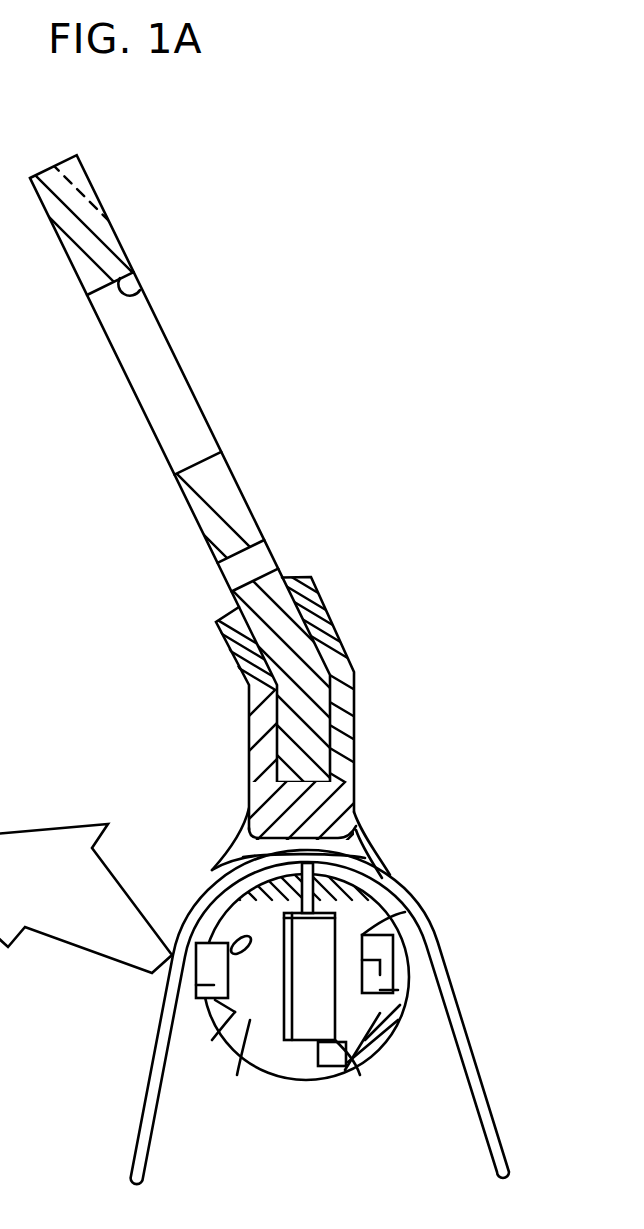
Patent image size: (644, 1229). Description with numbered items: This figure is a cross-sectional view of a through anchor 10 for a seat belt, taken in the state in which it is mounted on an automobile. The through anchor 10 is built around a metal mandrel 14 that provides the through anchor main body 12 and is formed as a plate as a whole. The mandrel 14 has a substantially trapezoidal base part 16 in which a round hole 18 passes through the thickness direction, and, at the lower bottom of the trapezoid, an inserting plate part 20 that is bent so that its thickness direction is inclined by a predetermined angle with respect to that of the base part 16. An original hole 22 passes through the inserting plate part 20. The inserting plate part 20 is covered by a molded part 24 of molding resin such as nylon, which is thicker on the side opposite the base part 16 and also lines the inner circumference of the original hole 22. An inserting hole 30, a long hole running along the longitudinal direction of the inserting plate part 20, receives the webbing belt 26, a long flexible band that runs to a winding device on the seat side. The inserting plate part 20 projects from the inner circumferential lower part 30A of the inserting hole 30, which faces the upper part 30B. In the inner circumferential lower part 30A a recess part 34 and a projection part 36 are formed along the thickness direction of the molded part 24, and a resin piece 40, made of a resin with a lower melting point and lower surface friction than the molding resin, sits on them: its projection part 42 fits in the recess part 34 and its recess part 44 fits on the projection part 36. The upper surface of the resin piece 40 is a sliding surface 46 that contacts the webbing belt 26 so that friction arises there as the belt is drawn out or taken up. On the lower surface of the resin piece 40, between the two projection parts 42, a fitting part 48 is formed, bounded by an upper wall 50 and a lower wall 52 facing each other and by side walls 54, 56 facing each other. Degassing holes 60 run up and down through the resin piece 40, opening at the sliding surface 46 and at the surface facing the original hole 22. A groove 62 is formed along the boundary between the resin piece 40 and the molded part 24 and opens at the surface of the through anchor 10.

The through anchor 10 is at (294, 219).
The through anchor main body 12 is at (339, 553).
The mandrel 14 is at (238, 488).
The base part 16 is at (117, 233).
The round hole 18 is at (139, 290).
The inserting plate part 20 is at (331, 618).
The original hole 22 is at (333, 792).
The molded part 24 is at (355, 665).
The webbing belt 26 is at (477, 1058).
The inserting hole 30 is at (252, 833).
The inner circumferential lower part 30A is at (400, 888).
The upper part 30B is at (358, 838).
The recess part 34 is at (212, 1040).
The projection part 36 is at (212, 903).
The resin piece 40 is at (426, 908).
The projection part 42 is at (215, 1000).
The recess part 44 is at (185, 957).
The sliding surface 46 is at (365, 865).
The fitting part 48 is at (300, 1045).
The upper wall 50 is at (243, 857).
The lower wall 52 is at (305, 1070).
The side wall 54 is at (363, 1045).
The side wall 56 is at (212, 873).
The degassing hole 60 is at (247, 840).
The groove 62 is at (168, 990).